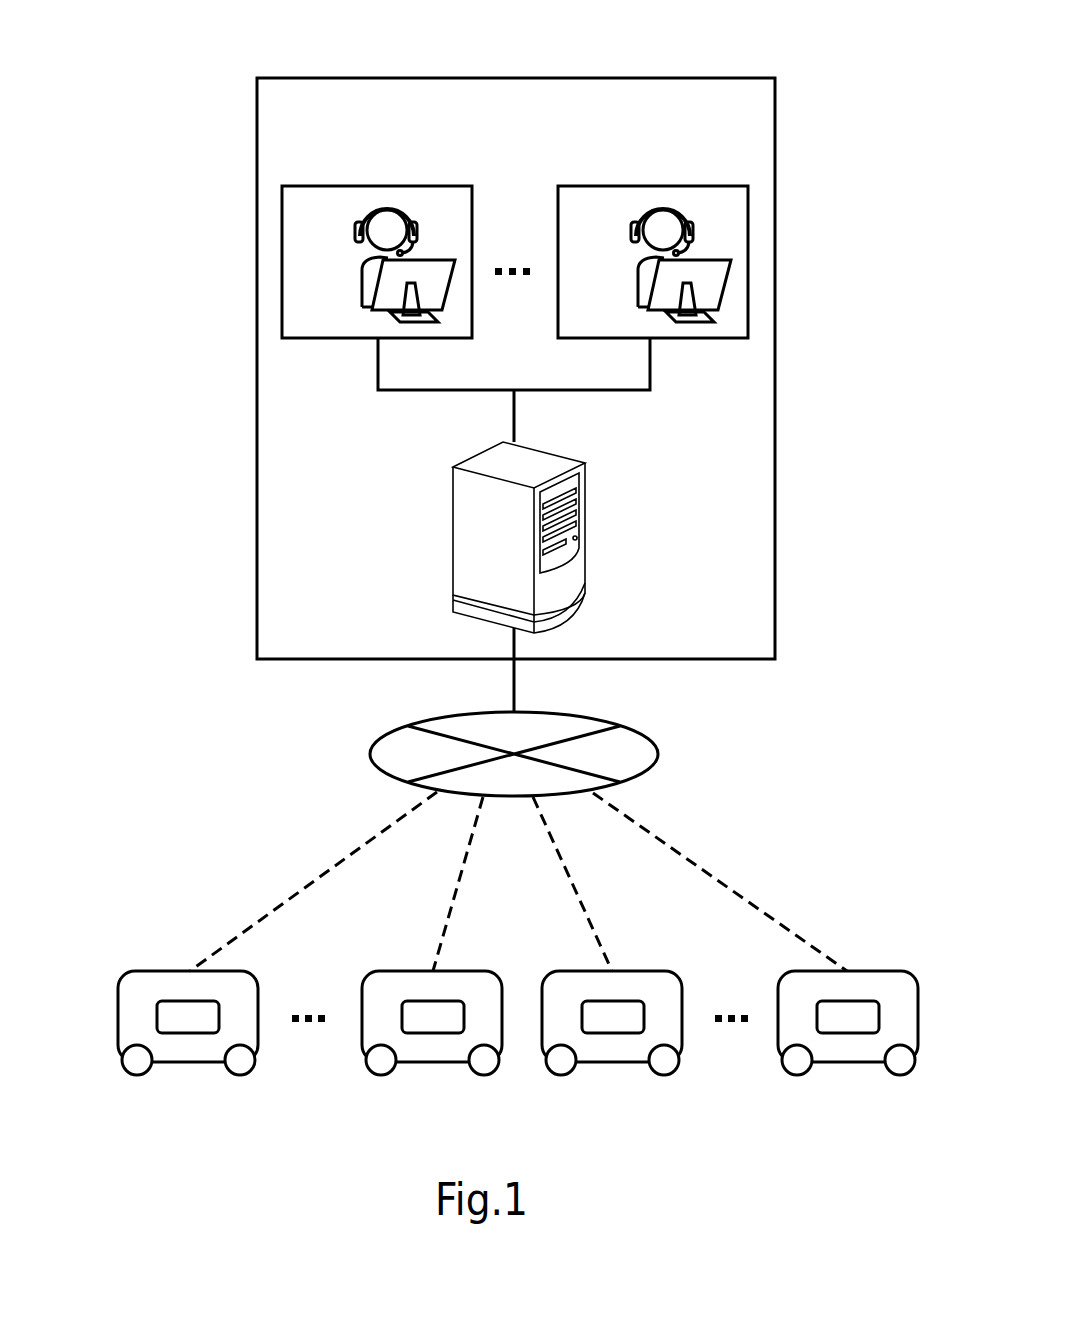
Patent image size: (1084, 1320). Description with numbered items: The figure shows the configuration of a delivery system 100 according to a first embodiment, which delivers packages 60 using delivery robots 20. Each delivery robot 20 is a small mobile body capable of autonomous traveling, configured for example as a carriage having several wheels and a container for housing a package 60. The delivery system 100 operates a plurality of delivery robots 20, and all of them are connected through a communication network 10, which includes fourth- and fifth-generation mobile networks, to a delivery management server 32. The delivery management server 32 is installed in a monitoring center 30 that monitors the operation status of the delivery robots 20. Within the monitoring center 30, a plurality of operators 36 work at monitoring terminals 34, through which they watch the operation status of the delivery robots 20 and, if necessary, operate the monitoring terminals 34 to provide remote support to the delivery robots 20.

The delivery system 100 is at (178, 478).
The monitoring center 30 is at (345, 78).
The monitoring terminal 34 is at (365, 186).
The operator 36 is at (362, 273).
The delivery management server 32 is at (452, 537).
The communication network 10 is at (412, 728).
The delivery robot 20 is at (155, 971).
The package 60 is at (220, 1002).